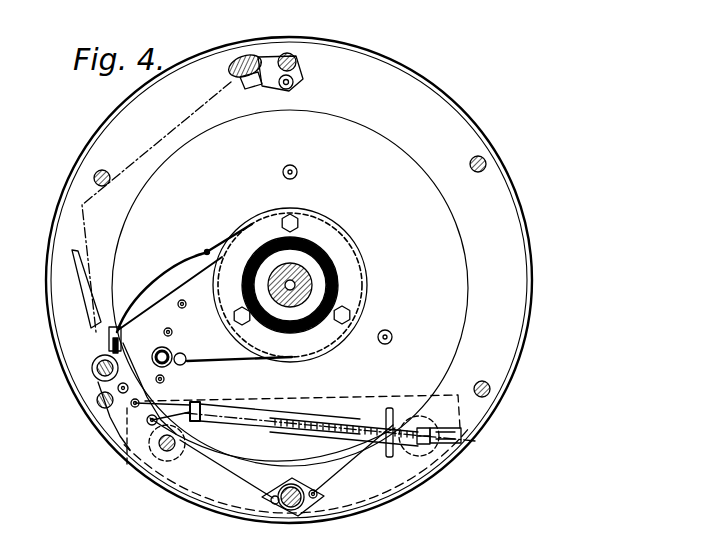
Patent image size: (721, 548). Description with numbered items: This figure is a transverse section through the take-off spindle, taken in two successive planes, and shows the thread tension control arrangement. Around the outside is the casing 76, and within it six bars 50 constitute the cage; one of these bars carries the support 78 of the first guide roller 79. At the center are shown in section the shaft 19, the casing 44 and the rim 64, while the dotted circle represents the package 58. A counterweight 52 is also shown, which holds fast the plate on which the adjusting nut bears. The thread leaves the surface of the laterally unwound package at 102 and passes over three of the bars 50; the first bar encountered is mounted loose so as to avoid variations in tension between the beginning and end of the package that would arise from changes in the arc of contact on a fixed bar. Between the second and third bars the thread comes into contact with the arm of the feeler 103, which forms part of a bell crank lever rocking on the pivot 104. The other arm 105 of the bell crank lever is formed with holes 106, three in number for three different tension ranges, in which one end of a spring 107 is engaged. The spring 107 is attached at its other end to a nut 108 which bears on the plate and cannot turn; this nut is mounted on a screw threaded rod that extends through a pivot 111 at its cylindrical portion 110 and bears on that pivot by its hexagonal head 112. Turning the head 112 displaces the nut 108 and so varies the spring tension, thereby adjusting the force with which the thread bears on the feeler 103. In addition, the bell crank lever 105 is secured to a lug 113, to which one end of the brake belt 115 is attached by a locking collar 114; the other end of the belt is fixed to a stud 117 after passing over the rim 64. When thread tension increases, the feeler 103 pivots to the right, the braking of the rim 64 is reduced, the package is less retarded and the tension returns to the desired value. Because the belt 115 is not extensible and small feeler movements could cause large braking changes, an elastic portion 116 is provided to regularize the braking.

The shaft 19 is at (300, 270).
The casing 44 is at (337, 277).
The bars 50 is at (99, 172).
The counterweight 52 is at (445, 453).
The package 58 is at (462, 331).
The rim 64 is at (363, 300).
The casing 76 is at (437, 88).
The support 78 is at (273, 70).
The first guide roller 79 is at (231, 83).
The thread leaving point 102 is at (397, 431).
The feeler 103 is at (88, 296).
The pivot 104 is at (100, 391).
The arm of the bell crank lever 105 is at (143, 417).
The holes 106 is at (125, 402).
The spring 107 is at (257, 415).
The nut 108 is at (384, 413).
The cylindrical portion 110 is at (415, 447).
The pivot 111 is at (423, 449).
The hexagonal head 112 is at (461, 445).
The lug 113 is at (90, 361).
The locking collar 114 is at (118, 338).
The brake belt 115 is at (147, 277).
The elastic portion 116 is at (170, 280).
The fixed stud 117 is at (172, 355).